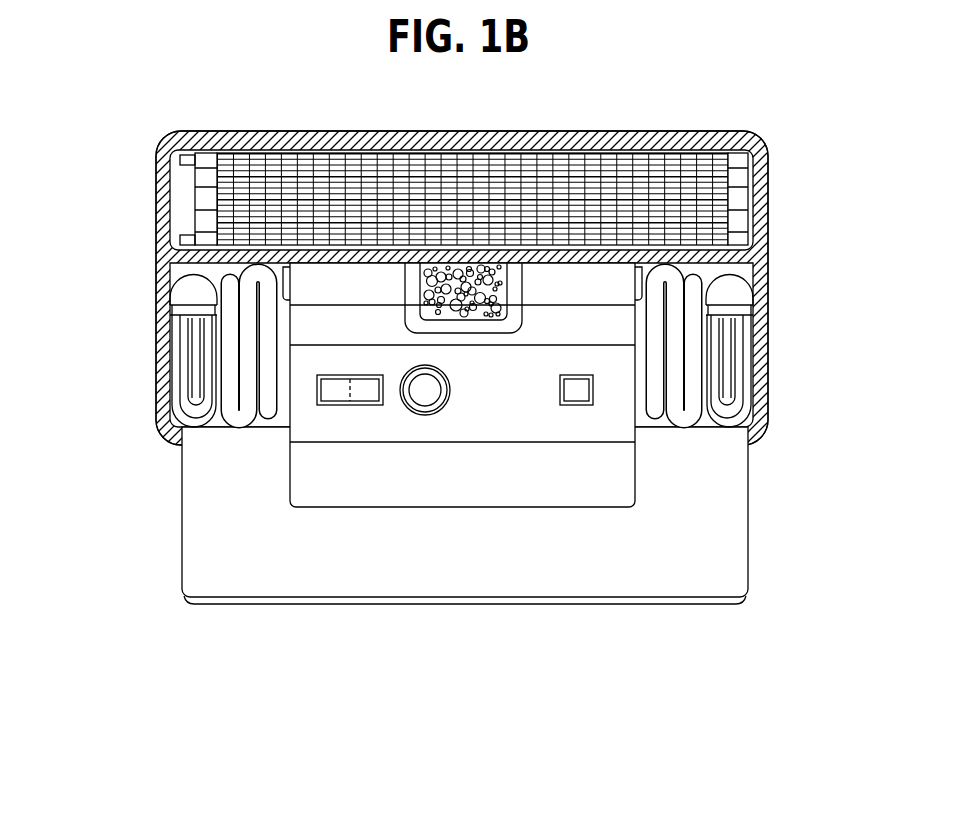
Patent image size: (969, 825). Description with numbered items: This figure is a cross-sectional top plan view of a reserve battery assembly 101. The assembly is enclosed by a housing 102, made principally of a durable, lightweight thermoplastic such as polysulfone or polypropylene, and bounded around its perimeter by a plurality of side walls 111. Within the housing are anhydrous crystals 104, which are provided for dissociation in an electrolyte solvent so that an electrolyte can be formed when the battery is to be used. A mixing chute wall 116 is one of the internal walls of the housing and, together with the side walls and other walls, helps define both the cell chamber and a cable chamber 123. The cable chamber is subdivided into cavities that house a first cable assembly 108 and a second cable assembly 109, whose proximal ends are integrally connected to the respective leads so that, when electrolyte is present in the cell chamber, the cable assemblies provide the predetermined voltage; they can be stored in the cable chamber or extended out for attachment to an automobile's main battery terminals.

The reserve battery assembly 101 is at (791, 78).
The housing 102 is at (768, 261).
The anhydrous crystals 104 is at (478, 283).
The first cable assembly 108 is at (243, 383).
The second cable assembly 109 is at (697, 363).
The side walls 111 is at (641, 131).
The mixing chute wall 116 is at (470, 335).
The cable chamber 123 is at (168, 292).